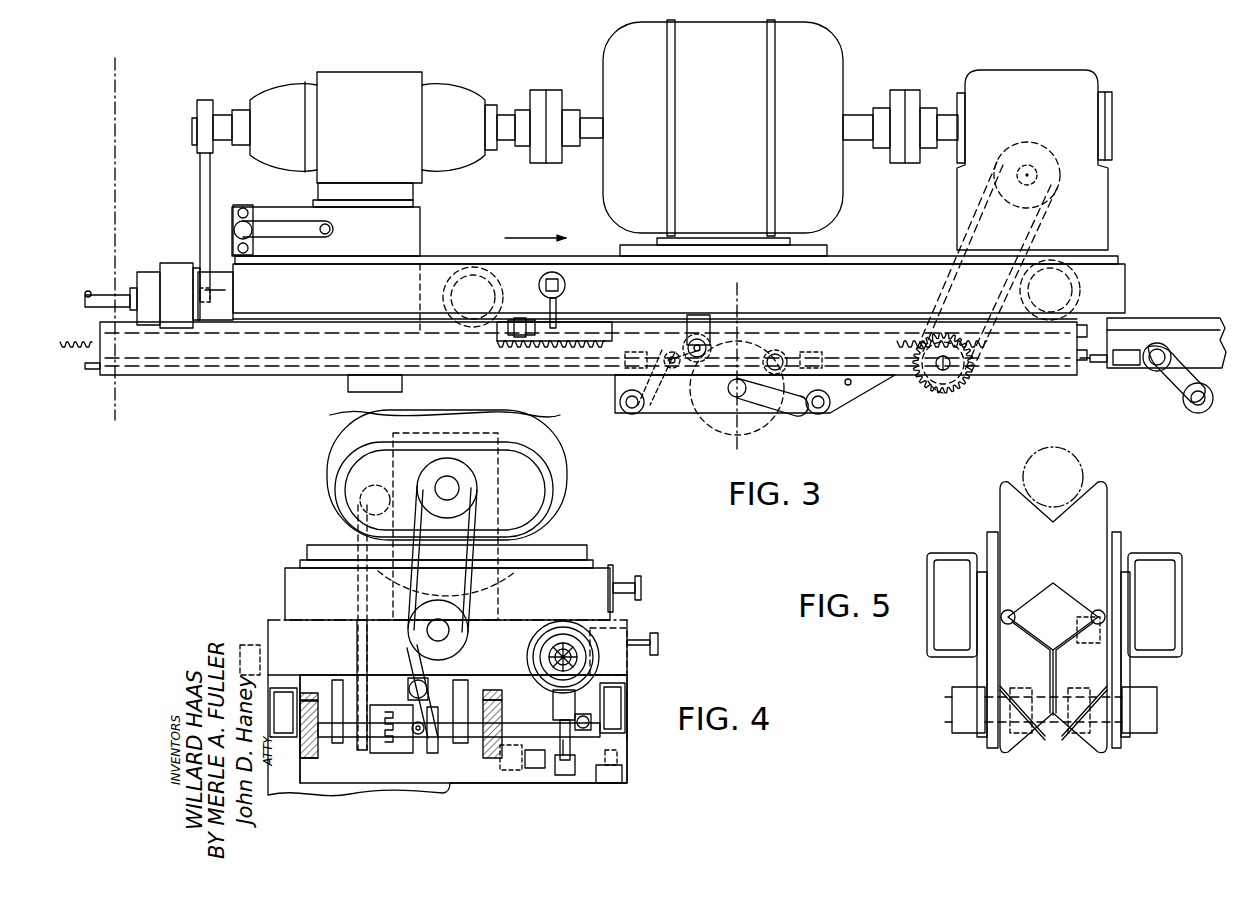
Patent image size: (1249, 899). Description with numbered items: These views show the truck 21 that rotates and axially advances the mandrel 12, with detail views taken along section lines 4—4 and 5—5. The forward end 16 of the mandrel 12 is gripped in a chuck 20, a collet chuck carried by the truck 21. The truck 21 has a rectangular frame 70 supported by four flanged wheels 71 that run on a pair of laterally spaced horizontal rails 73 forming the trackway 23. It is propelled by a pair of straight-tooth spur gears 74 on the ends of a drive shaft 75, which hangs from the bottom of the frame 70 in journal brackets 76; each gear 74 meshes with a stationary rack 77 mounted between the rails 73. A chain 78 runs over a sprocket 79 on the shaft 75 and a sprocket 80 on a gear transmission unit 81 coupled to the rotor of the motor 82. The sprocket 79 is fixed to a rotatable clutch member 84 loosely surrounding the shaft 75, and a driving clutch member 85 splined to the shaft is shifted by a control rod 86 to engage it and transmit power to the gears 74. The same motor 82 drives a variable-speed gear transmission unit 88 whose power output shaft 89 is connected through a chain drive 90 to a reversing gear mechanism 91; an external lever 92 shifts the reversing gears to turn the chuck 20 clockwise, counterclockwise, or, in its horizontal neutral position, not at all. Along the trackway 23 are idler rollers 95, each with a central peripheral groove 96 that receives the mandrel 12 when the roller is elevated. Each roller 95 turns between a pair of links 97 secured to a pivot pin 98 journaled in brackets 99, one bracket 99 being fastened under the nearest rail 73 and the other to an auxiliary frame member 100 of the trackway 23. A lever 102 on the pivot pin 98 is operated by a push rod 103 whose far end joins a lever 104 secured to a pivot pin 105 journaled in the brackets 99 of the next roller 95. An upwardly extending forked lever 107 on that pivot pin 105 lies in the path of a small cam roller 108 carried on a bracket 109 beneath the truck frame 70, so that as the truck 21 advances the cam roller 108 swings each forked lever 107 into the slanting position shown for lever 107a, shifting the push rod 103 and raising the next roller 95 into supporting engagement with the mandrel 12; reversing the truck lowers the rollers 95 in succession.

In FIG. 3, the section line 4- 4 is at (146, 77).
In FIG. 3, the section line 5- 5 is at (766, 296).
In FIG. 5, the mandrel 12 is at (1072, 462).
In FIG. 3, the forward end 16 is at (112, 288).
In FIG. 3, the chuck 20 is at (145, 276).
In FIG. 4, the chuck 20 is at (560, 638).
In FIG. 3, the truck 21 is at (1140, 88).
In FIG. 4, the truck 21 is at (285, 524).
In FIG. 3, the trackway 23 is at (1168, 320).
In FIG. 4, the trackway 23 is at (621, 683).
In FIG. 5, the trackway 23 is at (1157, 555).
In FIG. 3, the rectangular frame 70 is at (1130, 270).
In FIG. 4, the rectangular frame 70 is at (282, 632).
In FIG. 3, the flanged wheels 71 is at (486, 270).
In FIG. 4, the flanged wheels 71 is at (610, 634).
In FIG. 3, the horizontal rails 73 is at (1180, 340).
In FIG. 4, the horizontal rails 73 is at (270, 726).
In FIG. 5, the horizontal rails 73 is at (1182, 602).
In FIG. 3, the gears 74 is at (943, 370).
In FIG. 4, the gears 74 is at (306, 719).
In FIG. 3, the drive shaft 75 is at (933, 385).
In FIG. 4, the drive shaft 75 is at (302, 735).
In FIG. 3, the journal brackets 76 is at (964, 377).
In FIG. 4, the journal brackets 76 is at (340, 690).
In FIG. 3, the stationary rack 77 is at (561, 330).
In FIG. 4, the stationary rack 77 is at (307, 694).
In FIG. 3, the chain 78 is at (1050, 238).
In FIG. 4, the chain 78 is at (357, 600).
In FIG. 3, the sprocket 79 is at (960, 393).
In FIG. 4, the sprocket 79 is at (360, 685).
In FIG. 3, the sprocket 80 is at (1060, 189).
In FIG. 4, the sprocket 80 is at (382, 502).
In FIG. 3, the gear transmission unit 81 is at (1080, 80).
In FIG. 4, the gear transmission unit 81 is at (498, 468).
In FIG. 3, the motor 82 is at (825, 72).
In FIG. 4, the motor 82 is at (378, 428).
In FIG. 4, the rotatable clutch member 84 is at (383, 708).
In FIG. 4, the driving clutch member 85 is at (430, 752).
In FIG. 3, the control rod 86 is at (559, 278).
In FIG. 4, the control rod 86 is at (658, 643).
In FIG. 3, the variable-speed gear transmission unit 88 is at (388, 80).
In FIG. 4, the variable-speed gear transmission unit 88 is at (528, 462).
In FIG. 3, the power output shaft 89 is at (215, 110).
In FIG. 4, the power output shaft 89 is at (441, 486).
In FIG. 3, the chain drive 90 is at (200, 175).
In FIG. 4, the chain drive 90 is at (472, 522).
In FIG. 3, the reversing gear mechanism 91 is at (420, 216).
In FIG. 4, the reversing gear mechanism 91 is at (586, 564).
In FIG. 3, the external lever 92 is at (325, 229).
In FIG. 4, the external lever 92 is at (636, 586).
In FIG. 3, the idler rollers 95 is at (720, 400).
In FIG. 5, the idler rollers 95 is at (1108, 495).
In FIG. 5, the central peripheral groove 96 is at (1063, 632).
In FIG. 3, the links 97 is at (791, 407).
In FIG. 5, the links 97 is at (990, 678).
In FIG. 3, the pivot pin 98 is at (828, 402).
In FIG. 5, the pivot pin 98 is at (1158, 712).
In FIG. 3, the brackets 99 is at (622, 383).
In FIG. 4, the brackets 99 is at (510, 750).
In FIG. 5, the brackets 99 is at (978, 715).
In FIG. 3, the auxiliary frame member 100 is at (545, 372).
In FIG. 4, the auxiliary frame member 100 is at (496, 732).
In FIG. 5, the auxiliary frame member 100 is at (927, 576).
In FIG. 4, the lever 102 is at (590, 760).
In FIG. 3, the push rod 103 is at (505, 360).
In FIG. 4, the push rod 103 is at (585, 709).
In FIG. 3, the lever 104 is at (675, 340).
In FIG. 3, the pivot pin 105 is at (619, 403).
In FIG. 4, the pivot pin 105 is at (608, 782).
In FIG. 3, the forked lever 107 is at (1150, 392).
In FIG. 4, the forked lever 107 is at (560, 745).
In FIG. 3, the forked lever 107a is at (672, 356).
In FIG. 3, the cam roller 108 is at (711, 354).
In FIG. 4, the cam roller 108 is at (595, 724).
In FIG. 3, the bracket 109 is at (693, 318).
In FIG. 4, the bracket 109 is at (602, 684).